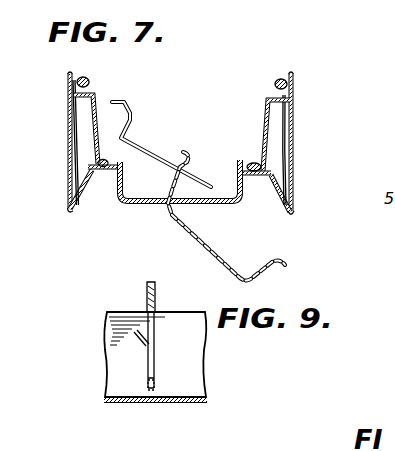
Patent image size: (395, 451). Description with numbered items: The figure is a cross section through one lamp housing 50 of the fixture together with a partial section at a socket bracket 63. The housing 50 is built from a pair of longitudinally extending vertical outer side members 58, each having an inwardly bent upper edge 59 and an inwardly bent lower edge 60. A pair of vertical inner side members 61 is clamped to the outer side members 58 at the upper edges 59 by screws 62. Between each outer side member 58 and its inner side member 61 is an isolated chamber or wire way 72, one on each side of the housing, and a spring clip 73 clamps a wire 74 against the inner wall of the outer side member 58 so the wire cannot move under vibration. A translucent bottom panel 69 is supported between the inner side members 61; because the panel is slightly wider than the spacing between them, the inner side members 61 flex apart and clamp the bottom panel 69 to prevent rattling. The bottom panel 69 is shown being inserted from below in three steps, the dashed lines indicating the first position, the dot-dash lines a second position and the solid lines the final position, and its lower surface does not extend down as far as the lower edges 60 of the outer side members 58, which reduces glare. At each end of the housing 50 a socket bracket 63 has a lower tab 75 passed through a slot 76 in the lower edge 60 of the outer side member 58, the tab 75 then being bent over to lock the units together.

In FIG. 7, the housing 50 is at (300, 111).
In FIG. 9, the housing 50 is at (125, 402).
In FIG. 7, the outer side member 58 is at (68, 138).
In FIG. 9, the outer side member 58 is at (160, 403).
In FIG. 7, the upper edge 59 is at (86, 90).
In FIG. 7, the lower edge 60 is at (284, 194).
In FIG. 9, the lower edge 60 is at (189, 350).
In FIG. 7, the inner side member 61 is at (94, 98).
In FIG. 7, the screw 62 is at (103, 62).
In FIG. 9, the socket bracket 63 is at (156, 286).
In FIG. 7, the bottom panel 69 is at (118, 188).
In FIG. 7, the wire way 72 is at (73, 160).
In FIG. 7, the spring clip 73 is at (73, 117).
In FIG. 7, the wire 74 is at (73, 188).
In FIG. 9, the lower tab 75 is at (155, 368).
In FIG. 9, the slot 76 is at (154, 341).